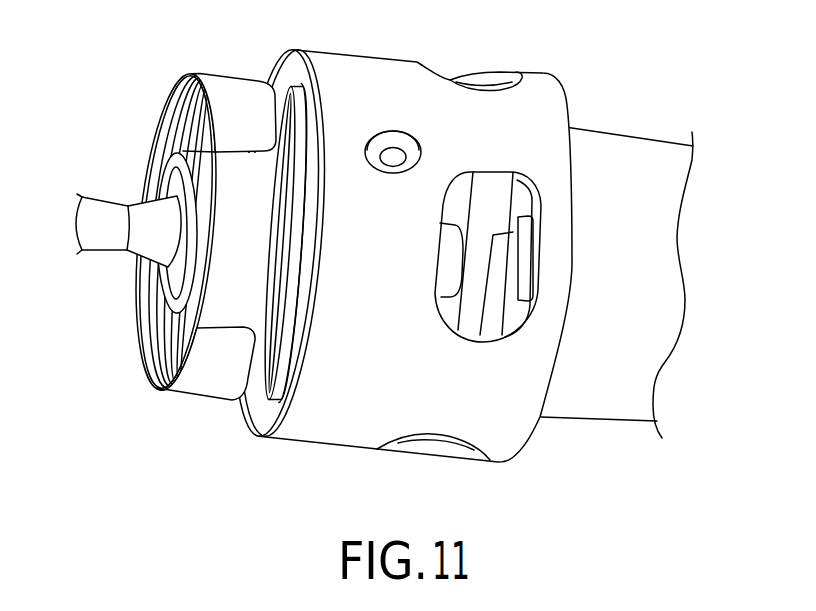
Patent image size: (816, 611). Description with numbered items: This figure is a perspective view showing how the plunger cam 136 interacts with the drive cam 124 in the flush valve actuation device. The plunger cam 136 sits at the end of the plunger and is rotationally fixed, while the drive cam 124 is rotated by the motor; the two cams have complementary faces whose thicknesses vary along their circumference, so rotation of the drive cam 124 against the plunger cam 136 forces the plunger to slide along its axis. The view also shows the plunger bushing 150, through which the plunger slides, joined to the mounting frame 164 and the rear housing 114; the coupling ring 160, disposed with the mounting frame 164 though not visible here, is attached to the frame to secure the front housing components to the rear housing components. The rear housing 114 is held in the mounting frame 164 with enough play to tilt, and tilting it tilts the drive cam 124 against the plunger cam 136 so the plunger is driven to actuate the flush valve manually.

The rear housing 114 is at (597, 418).
The drive cam 124 is at (503, 270).
The plunger cam 136 is at (100, 253).
The plunger bushing 150 is at (182, 173).
The coupling ring 160 is at (145, 376).
The mounting frame 164 is at (298, 440).